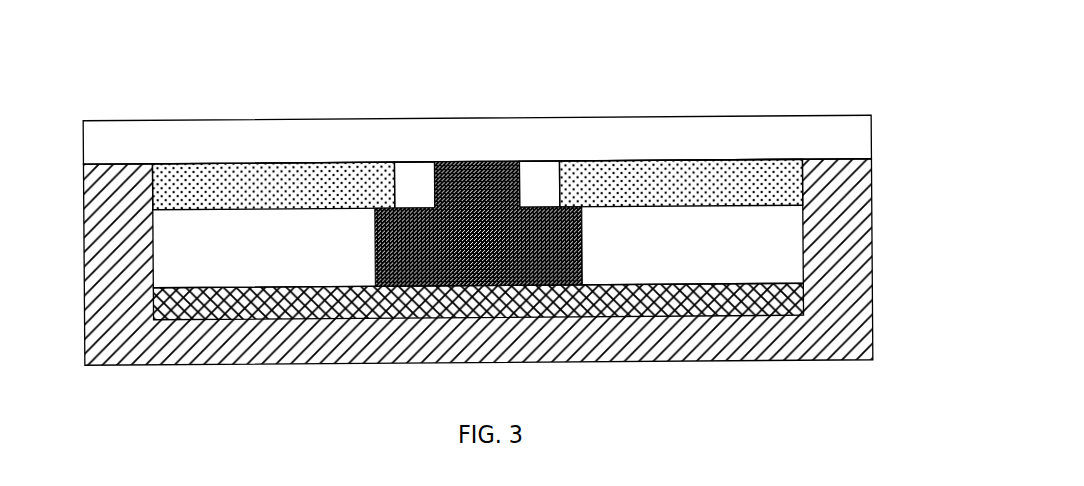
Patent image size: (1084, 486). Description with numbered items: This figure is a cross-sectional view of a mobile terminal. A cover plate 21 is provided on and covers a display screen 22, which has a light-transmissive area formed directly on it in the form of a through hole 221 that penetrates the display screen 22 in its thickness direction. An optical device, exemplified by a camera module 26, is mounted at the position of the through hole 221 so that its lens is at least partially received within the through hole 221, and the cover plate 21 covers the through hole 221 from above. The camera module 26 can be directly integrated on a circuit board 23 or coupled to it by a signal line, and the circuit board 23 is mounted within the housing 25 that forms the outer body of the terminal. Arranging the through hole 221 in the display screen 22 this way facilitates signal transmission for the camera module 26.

The cover plate 21 is at (208, 119).
The display screen 22 is at (676, 172).
The through hole 221 is at (541, 172).
The circuit board 23 is at (662, 284).
The housing 25 is at (871, 283).
The camera module 26 is at (474, 172).